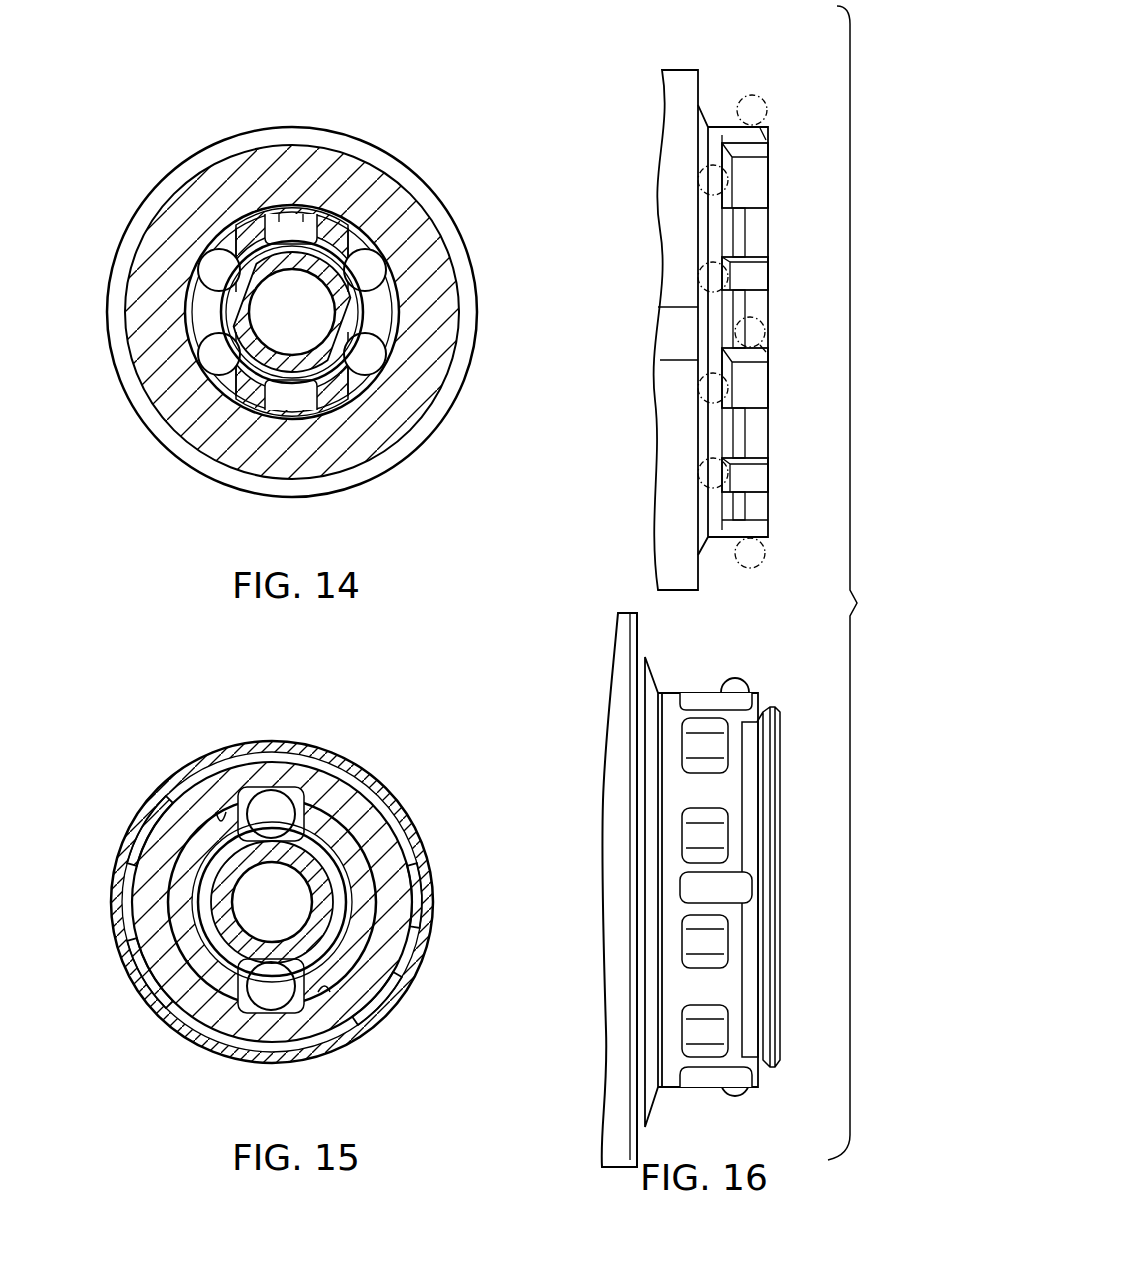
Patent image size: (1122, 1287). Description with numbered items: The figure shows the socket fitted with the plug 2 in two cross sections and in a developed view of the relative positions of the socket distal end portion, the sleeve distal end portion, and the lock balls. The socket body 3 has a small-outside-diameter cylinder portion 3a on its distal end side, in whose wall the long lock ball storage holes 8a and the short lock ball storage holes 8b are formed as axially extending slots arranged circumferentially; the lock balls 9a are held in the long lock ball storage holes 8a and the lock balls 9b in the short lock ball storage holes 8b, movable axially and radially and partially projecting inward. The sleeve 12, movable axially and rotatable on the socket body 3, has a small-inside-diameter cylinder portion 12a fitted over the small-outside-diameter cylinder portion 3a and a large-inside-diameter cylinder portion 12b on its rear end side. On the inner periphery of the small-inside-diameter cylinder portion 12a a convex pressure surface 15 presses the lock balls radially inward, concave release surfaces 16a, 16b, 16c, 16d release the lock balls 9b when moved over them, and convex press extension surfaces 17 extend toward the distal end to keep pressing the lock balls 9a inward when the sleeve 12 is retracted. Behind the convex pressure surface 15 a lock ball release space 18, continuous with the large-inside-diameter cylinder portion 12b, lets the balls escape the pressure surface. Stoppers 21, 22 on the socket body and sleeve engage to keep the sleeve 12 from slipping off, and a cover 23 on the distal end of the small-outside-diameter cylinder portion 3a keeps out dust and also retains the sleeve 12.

In FIG. 14, the plug 2 is at (351, 315).
In FIG. 15, the plug 2 is at (221, 895).
In FIG. 14, the socket body 3 is at (183, 315).
In FIG. 15, the socket body 3 is at (354, 953).
In FIG. 16, the socket body 3 is at (600, 690).
In FIG. 14, the small-outside-diameter cylinder portion 3a is at (217, 341).
In FIG. 15, the small-outside-diameter cylinder portion 3a is at (388, 1001).
In FIG. 16, the small-outside-diameter cylinder portion 3a is at (665, 728).
In FIG. 14, the long lock ball storage holes 8a is at (302, 218).
In FIG. 15, the long lock ball storage holes 8a is at (279, 789).
In FIG. 16, the long lock ball storage holes 8a is at (693, 697).
In FIG. 14, the short lock ball storage holes 8b is at (232, 239).
In FIG. 16, the short lock ball storage holes 8b is at (685, 745).
In FIG. 15, the lock balls 9a is at (267, 803).
In FIG. 16, the lock balls 9a is at (762, 100).
In FIG. 14, the lock balls 9b is at (200, 274).
In FIG. 16, the lock balls 9b is at (700, 180).
In FIG. 14, the sleeve 12 is at (388, 153).
In FIG. 15, the sleeve 12 is at (369, 770).
In FIG. 16, the sleeve 12 is at (712, 82).
In FIG. 14, the small-inside-diameter cylinder portion 12a is at (388, 207).
In FIG. 15, the small-inside-diameter cylinder portion 12a is at (364, 799).
In FIG. 16, the small-inside-diameter cylinder portion 12a is at (768, 150).
In FIG. 16, the large-inside-diameter cylinder portion 12b is at (680, 77).
In FIG. 14, the convex pressure surface 15 is at (280, 214).
In FIG. 16, the convex pressure surface 15 is at (718, 232).
In FIG. 15, the concave release surface 16a is at (381, 857).
In FIG. 16, the concave release surface 16a is at (755, 190).
In FIG. 15, the concave release surface 16b is at (380, 946).
In FIG. 16, the concave release surface 16b is at (755, 276).
In FIG. 15, the concave release surface 16c is at (181, 982).
In FIG. 16, the concave release surface 16c is at (755, 385).
In FIG. 15, the concave release surface 16d is at (168, 834).
In FIG. 16, the concave release surface 16d is at (755, 478).
In FIG. 15, the convex press extension surfaces 17 is at (221, 818).
In FIG. 16, the convex press extension surfaces 17 is at (763, 128).
In FIG. 16, the lock ball release space 18 is at (672, 128).
In FIG. 16, the stopper 21 is at (750, 793).
In FIG. 16, the stopper 22 is at (740, 230).
In FIG. 15, the cover 23 is at (409, 830).